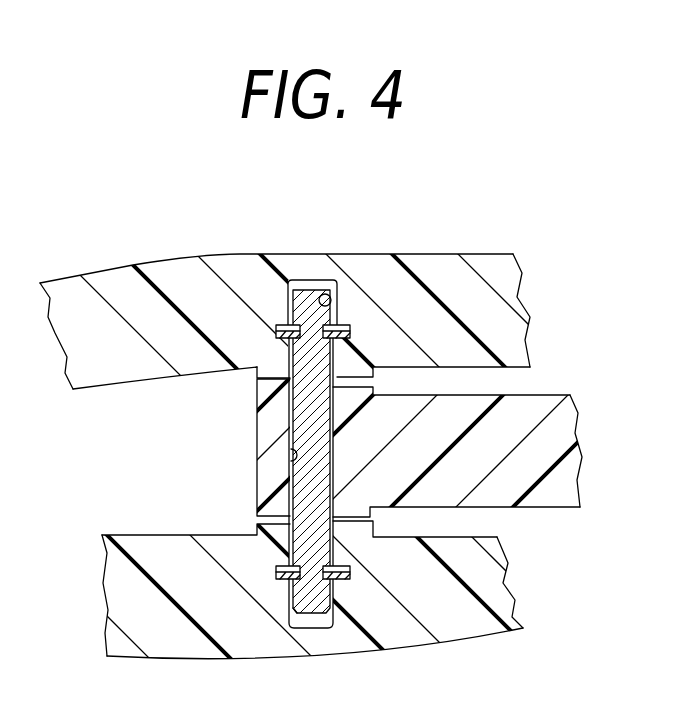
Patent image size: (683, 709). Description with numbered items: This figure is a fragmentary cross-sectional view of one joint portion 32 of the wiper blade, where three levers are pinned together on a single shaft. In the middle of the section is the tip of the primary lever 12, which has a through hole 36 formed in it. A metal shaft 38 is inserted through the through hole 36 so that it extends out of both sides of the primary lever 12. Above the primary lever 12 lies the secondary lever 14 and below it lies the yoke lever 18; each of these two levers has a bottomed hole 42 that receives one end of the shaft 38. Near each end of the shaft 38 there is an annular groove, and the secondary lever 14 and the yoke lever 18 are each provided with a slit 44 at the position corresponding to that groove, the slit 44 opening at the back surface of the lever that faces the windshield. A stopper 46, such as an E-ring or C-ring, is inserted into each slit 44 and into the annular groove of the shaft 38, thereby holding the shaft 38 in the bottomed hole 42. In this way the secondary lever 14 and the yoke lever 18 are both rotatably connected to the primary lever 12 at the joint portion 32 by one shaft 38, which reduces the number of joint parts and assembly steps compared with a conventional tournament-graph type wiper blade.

The primary lever 12 is at (557, 394).
The secondary lever 14 is at (170, 258).
The yoke lever 18 is at (167, 656).
The joint portion 32 is at (374, 224).
The through hole 36 is at (293, 460).
The shaft 38 is at (310, 413).
The bottomed hole 42 is at (330, 298).
The slit 44 is at (348, 328).
The stopper 46 is at (283, 325).